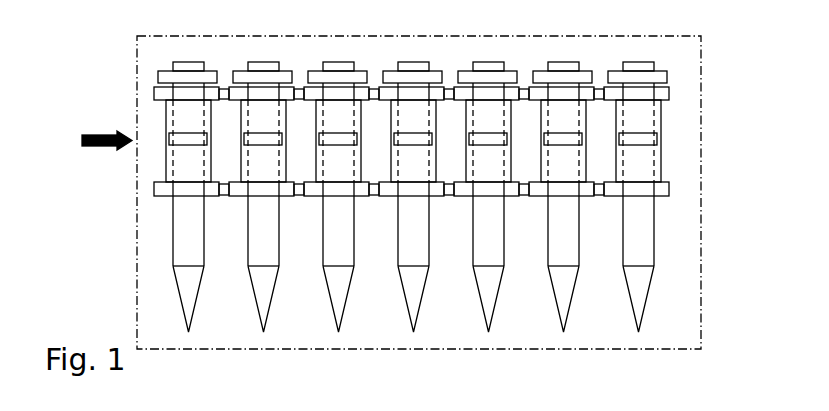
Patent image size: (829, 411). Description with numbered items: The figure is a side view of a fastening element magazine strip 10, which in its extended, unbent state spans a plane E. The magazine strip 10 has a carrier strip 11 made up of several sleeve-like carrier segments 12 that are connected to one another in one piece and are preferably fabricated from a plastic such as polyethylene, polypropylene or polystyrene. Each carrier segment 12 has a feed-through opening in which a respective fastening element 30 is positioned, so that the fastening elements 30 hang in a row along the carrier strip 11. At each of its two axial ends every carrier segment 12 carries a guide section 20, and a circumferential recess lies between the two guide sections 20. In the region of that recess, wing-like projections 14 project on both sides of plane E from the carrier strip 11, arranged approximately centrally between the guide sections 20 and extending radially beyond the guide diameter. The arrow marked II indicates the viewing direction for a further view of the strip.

The fastening element magazine strip 10 is at (407, 212).
The carrier strip 11 is at (301, 187).
The carrier segment 12 is at (658, 115).
The wing-like projection 14 is at (640, 140).
The guide section 20 is at (670, 92).
The fastening element 30 is at (652, 227).
The plane E is at (702, 47).
The view direction arrow II is at (87, 135).